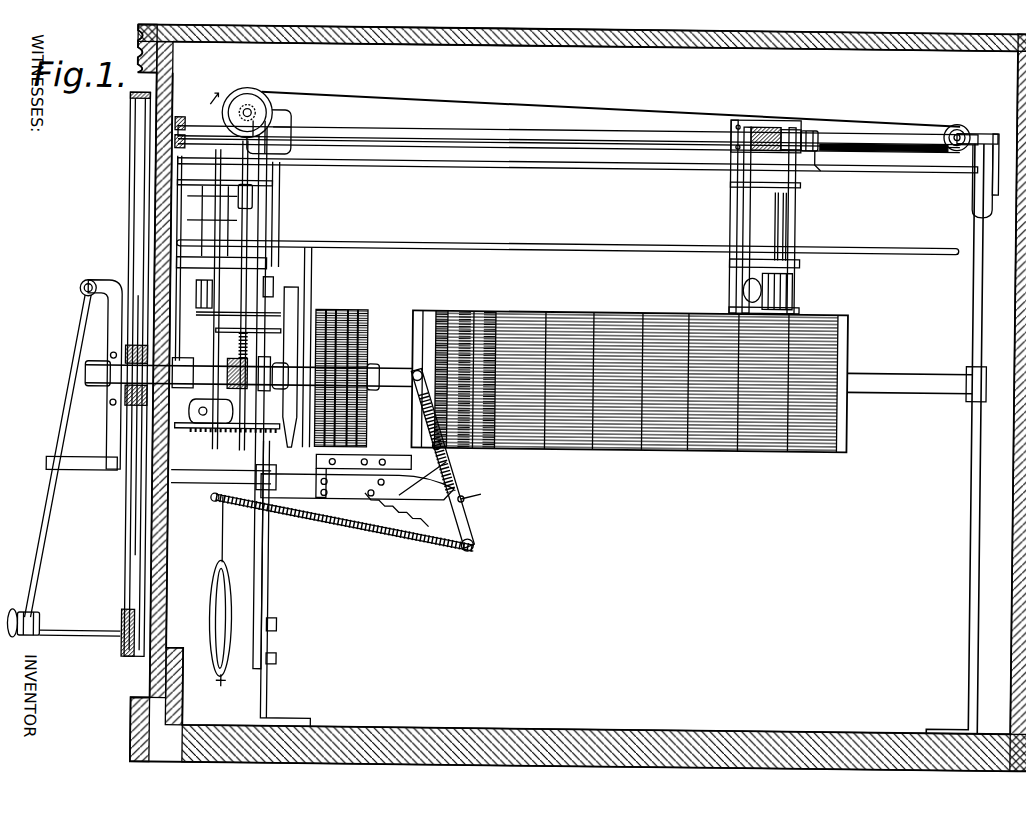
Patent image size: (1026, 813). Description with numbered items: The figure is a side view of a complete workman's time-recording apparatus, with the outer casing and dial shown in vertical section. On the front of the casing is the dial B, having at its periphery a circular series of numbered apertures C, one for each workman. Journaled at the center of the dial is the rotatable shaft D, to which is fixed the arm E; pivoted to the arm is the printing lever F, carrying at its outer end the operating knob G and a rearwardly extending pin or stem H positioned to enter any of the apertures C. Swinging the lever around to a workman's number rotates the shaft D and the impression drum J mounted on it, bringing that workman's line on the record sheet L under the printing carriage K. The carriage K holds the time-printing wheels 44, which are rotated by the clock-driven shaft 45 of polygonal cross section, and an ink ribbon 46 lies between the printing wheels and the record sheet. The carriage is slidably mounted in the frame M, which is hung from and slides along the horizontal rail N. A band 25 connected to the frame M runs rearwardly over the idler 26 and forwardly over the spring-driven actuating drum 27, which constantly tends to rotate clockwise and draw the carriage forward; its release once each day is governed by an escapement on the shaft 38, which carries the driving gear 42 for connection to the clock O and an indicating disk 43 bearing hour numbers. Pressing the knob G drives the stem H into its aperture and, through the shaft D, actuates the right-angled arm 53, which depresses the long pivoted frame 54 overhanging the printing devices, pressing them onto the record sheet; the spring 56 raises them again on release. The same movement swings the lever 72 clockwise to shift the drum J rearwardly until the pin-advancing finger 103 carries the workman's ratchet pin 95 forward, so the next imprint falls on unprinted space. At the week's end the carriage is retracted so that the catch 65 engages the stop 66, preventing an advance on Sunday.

The band 25 is at (631, 99).
The idler 26 is at (953, 120).
The spring-driven actuating drum 27 is at (244, 99).
The horizontal shaft 38 is at (265, 293).
The driving gear 42 is at (204, 316).
The indicating disk 43 is at (298, 303).
The time-printing wheels 44 is at (762, 196).
The clock-driven shaft 45 is at (573, 245).
The ink ribbon 46 is at (788, 309).
The right-angled arm or lever 53 is at (238, 203).
The frame 54 is at (355, 167).
The spring 56 is at (767, 123).
The catch 65 is at (809, 126).
The stop 66 is at (812, 149).
The lever 72 is at (477, 536).
The ratchet pin 95 is at (354, 318).
The pin-advancing finger 103 is at (367, 451).
The dial B is at (127, 175).
The apertures C is at (127, 650).
The rotatable shaft D is at (380, 365).
The arm E is at (106, 280).
The printing lever F is at (84, 347).
The operating knob G is at (18, 621).
The pin or stem H is at (86, 637).
The impression drum J is at (629, 362).
The printing carriage K is at (794, 211).
The record sheet L is at (627, 315).
The frame M is at (729, 216).
The horizontal rail N is at (578, 132).
The clock O is at (192, 204).